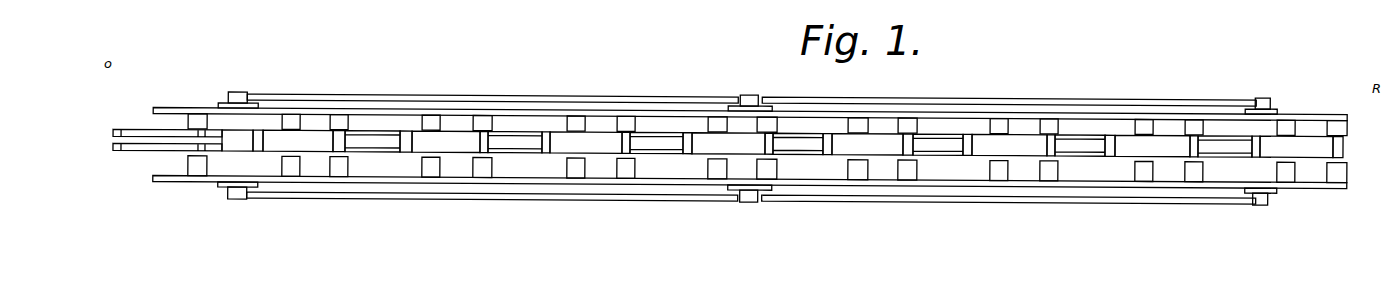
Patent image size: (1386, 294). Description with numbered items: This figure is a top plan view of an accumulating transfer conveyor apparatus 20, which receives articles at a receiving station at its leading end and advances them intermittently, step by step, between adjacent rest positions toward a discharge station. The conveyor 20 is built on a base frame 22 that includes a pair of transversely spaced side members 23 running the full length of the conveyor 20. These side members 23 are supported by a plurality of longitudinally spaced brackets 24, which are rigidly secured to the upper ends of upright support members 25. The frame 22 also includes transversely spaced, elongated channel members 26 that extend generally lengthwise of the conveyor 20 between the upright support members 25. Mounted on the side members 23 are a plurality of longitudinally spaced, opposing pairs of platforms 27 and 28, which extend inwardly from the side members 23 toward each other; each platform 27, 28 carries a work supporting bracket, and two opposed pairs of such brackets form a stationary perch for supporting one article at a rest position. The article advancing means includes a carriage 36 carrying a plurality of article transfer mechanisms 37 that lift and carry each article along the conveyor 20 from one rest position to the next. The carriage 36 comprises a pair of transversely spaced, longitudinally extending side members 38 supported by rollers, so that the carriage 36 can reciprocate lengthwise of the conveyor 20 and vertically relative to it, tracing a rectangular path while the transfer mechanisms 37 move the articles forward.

The accumulating transfer conveyor apparatus 20 is at (588, 210).
The base frame 22 is at (750, 149).
The side members 23 is at (750, 148).
The brackets 24 is at (747, 148).
The upright support members 25 is at (749, 148).
The channel members 26 is at (752, 149).
The platforms 27 is at (767, 169).
The platforms 28 is at (767, 125).
The carriage 36 is at (167, 140).
The article transfer mechanisms 37 is at (777, 144).
The side members 38 is at (798, 144).